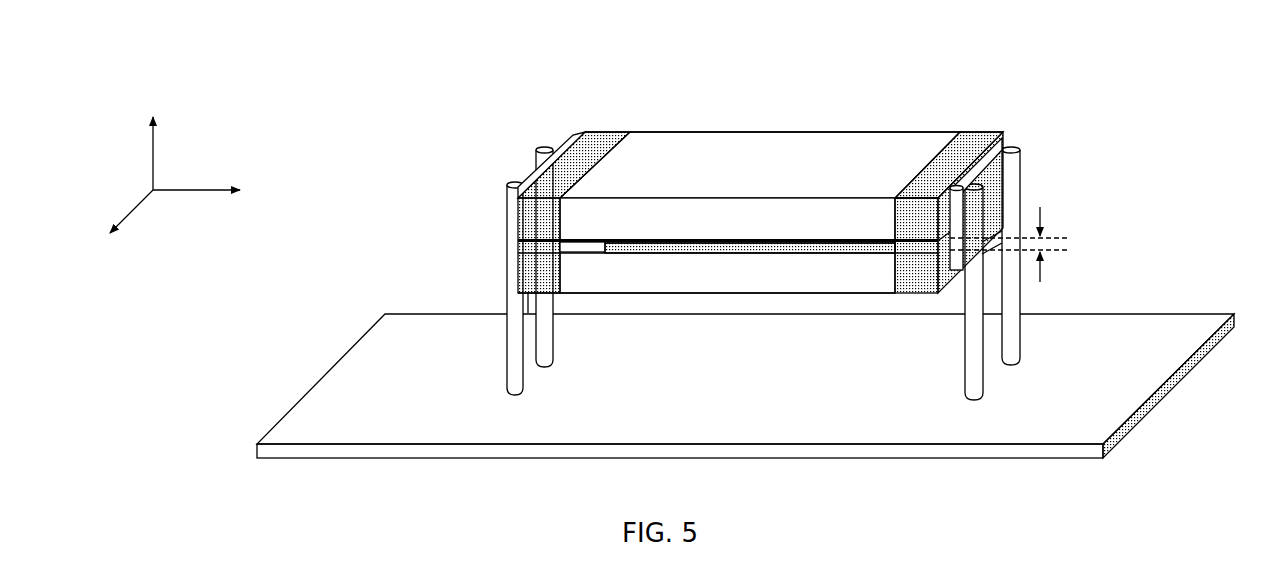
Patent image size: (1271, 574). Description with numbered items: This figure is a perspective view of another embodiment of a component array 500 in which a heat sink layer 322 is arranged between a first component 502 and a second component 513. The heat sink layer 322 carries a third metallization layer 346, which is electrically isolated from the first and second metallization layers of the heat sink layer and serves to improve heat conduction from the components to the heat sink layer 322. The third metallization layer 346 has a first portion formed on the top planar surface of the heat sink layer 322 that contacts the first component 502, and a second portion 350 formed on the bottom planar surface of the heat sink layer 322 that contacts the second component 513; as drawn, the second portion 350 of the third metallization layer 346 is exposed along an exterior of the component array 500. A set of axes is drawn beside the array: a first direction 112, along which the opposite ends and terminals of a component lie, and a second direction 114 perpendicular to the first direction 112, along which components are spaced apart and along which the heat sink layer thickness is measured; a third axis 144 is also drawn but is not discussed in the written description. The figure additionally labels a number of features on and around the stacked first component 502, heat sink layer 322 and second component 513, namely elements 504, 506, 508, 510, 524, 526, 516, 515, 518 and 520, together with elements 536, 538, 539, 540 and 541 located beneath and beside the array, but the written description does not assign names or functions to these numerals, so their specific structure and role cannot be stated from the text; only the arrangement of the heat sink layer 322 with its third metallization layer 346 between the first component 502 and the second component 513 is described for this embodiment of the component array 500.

The component array 500 is at (358, 66).
The first direction 112 is at (225, 193).
The second direction 114 is at (148, 137).
The third axis direction 144 is at (111, 233).
The first component 502 is at (668, 131).
The first clamp block 504 is at (533, 182).
The first rail 506 is at (577, 129).
The second clamp block 508 is at (944, 213).
The second rail 510 is at (1007, 133).
The heat sink layer 322 is at (583, 236).
The third metallization layer 346 is at (672, 240).
The second portion of the third metallization layer 350 is at (736, 241).
The plate 524 is at (688, 167).
The top surface of clamp 526 is at (917, 235).
The first clamp face 516 is at (516, 279).
The bottom edge of first clamp 515 is at (517, 295).
The second clamp face 518 is at (916, 295).
The pin 520 is at (954, 285).
The second component 513 is at (675, 297).
The first post 536 is at (531, 149).
The second post 538 is at (1024, 161).
The support posts 539 is at (508, 372).
The base plate 540 is at (705, 393).
The gap distance 541 is at (1040, 210).